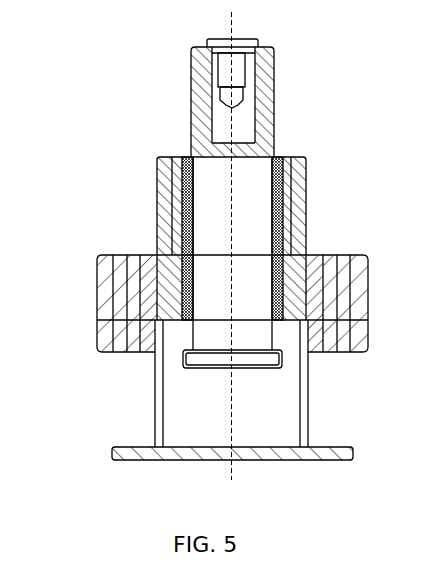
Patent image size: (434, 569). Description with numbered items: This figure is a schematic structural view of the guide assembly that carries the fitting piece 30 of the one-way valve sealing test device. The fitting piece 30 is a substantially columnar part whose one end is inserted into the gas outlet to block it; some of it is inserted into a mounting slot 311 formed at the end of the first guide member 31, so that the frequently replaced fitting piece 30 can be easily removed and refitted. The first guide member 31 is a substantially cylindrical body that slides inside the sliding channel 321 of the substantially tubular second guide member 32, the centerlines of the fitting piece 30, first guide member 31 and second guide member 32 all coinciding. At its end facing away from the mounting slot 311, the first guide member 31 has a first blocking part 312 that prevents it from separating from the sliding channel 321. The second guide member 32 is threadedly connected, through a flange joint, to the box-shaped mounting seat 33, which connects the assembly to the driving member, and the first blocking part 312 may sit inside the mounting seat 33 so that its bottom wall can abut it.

The fitting piece 30 is at (191, 70).
The mounting slot 311 is at (191, 115).
The sliding channel 321 is at (190, 157).
The first guide member 31 is at (237, 238).
The second guide member 32 is at (157, 300).
The mounting seat 33 is at (152, 345).
The first blocking part 312 is at (222, 358).